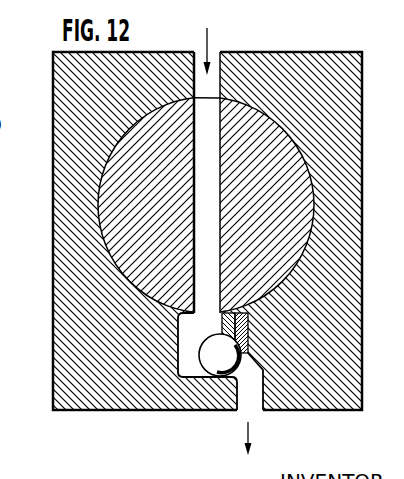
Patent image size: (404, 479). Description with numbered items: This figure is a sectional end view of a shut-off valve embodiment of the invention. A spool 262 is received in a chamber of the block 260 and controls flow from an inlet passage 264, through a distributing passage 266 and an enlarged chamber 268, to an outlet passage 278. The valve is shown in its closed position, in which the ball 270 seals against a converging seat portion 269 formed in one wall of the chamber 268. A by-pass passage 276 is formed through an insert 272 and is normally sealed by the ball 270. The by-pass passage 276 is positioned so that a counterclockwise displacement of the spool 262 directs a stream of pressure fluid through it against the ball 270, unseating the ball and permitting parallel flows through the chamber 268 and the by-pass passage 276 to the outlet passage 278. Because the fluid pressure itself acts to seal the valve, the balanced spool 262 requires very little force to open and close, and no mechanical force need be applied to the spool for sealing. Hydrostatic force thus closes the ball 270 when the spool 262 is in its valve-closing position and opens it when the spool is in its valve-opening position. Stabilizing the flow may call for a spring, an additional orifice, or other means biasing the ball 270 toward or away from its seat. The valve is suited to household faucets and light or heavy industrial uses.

The block 260 is at (53, 282).
The spool 262 is at (280, 229).
The inlet passage 264 is at (216, 52).
The distributing passage 266 is at (221, 178).
The enlarged chamber 268 is at (178, 335).
The converging seat portion 269 is at (252, 366).
The ball 270 is at (206, 355).
The insert 272 is at (250, 340).
The by-pass passage 276 is at (250, 324).
The outlet passage 278 is at (238, 410).